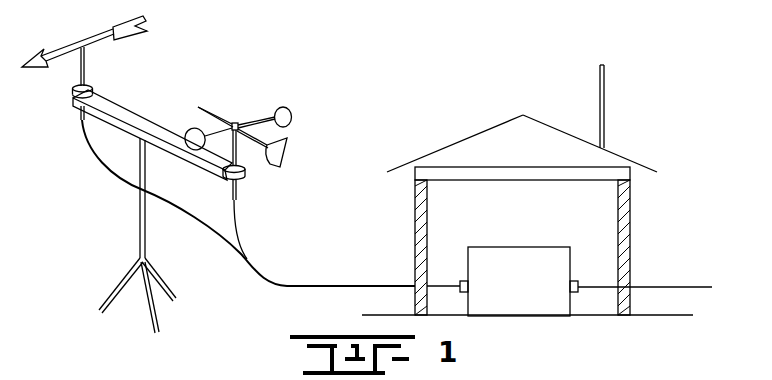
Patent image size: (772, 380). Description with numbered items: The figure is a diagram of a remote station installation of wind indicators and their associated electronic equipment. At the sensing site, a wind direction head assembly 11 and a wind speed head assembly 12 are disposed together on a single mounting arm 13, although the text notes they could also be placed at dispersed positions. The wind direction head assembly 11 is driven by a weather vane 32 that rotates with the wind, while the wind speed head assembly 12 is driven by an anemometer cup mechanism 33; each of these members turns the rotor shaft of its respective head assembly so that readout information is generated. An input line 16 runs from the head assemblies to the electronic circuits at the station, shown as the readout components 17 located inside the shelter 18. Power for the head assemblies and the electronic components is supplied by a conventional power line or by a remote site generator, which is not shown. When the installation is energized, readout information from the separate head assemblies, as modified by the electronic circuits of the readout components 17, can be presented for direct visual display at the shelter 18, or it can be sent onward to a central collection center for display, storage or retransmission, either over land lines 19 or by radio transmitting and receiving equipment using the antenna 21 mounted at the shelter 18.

The wind direction head assembly 11 is at (93, 91).
The wind speed head assembly 12 is at (247, 176).
The mounting arm 13 is at (131, 113).
The input line 16 is at (252, 262).
The readout components 17 is at (527, 247).
The shelter 18 is at (628, 208).
The land lines 19 is at (672, 287).
The antenna 21 is at (606, 118).
The weather vane 32 is at (66, 50).
The anemometer cup mechanism 33 is at (253, 117).